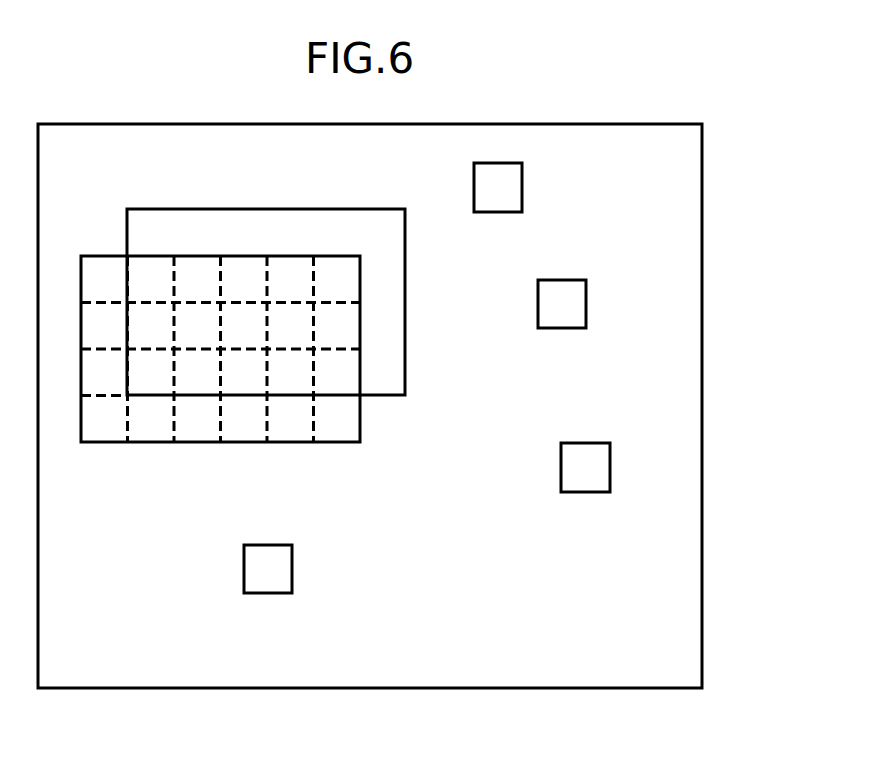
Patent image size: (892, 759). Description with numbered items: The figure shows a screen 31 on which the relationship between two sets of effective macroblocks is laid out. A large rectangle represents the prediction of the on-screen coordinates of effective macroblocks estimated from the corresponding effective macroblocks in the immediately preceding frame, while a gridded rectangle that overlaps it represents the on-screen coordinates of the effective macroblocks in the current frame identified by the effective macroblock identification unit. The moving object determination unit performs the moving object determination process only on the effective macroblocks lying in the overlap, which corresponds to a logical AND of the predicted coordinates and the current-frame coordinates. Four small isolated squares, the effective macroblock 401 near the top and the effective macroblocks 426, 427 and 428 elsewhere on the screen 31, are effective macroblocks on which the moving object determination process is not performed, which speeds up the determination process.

The screen 31 is at (704, 168).
The effective macroblock 401 is at (523, 181).
The effective macroblock 426 is at (587, 298).
The effective macroblock 427 is at (611, 464).
The effective macroblock 428 is at (293, 562).